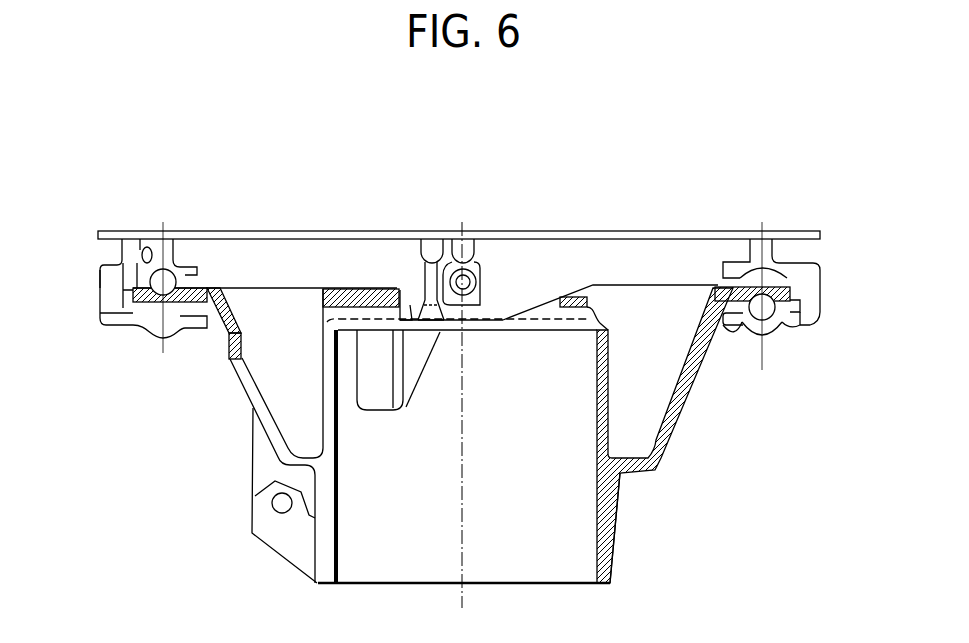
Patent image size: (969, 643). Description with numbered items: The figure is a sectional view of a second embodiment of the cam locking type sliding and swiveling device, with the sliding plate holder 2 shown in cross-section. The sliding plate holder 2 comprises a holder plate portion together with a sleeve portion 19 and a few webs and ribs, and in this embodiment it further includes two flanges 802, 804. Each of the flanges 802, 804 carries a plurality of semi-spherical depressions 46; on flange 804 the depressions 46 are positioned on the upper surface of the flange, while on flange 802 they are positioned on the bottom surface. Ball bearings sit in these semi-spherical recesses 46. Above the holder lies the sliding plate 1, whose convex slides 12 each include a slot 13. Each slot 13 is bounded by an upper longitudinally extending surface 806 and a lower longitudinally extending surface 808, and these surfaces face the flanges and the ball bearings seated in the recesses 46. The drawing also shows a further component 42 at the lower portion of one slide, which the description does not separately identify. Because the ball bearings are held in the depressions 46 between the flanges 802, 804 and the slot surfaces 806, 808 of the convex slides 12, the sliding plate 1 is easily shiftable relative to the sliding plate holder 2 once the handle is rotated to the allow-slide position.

The sliding plate 1 is at (512, 224).
The sliding plate holder 2 is at (670, 425).
The sleeve portion 19 is at (618, 518).
The lower retainer 42 is at (733, 325).
The semi-spherical depressions 46 is at (123, 263).
The flange 802 is at (715, 287).
The flange 804 is at (213, 282).
The upper longitudinally extending surface 806 is at (142, 247).
The lower longitudinally extending surface 808 is at (178, 340).
The convex slides 12 is at (102, 323).
The slot 13 is at (130, 293).